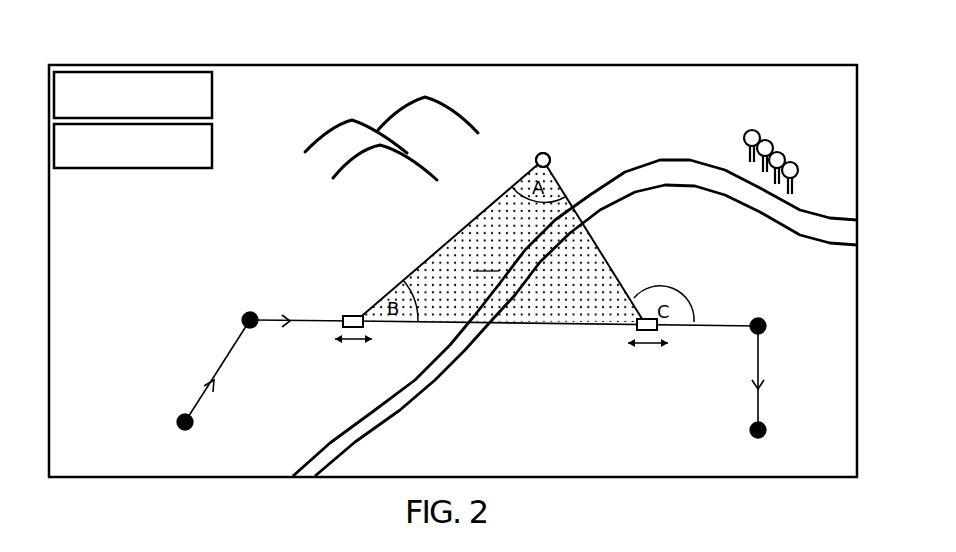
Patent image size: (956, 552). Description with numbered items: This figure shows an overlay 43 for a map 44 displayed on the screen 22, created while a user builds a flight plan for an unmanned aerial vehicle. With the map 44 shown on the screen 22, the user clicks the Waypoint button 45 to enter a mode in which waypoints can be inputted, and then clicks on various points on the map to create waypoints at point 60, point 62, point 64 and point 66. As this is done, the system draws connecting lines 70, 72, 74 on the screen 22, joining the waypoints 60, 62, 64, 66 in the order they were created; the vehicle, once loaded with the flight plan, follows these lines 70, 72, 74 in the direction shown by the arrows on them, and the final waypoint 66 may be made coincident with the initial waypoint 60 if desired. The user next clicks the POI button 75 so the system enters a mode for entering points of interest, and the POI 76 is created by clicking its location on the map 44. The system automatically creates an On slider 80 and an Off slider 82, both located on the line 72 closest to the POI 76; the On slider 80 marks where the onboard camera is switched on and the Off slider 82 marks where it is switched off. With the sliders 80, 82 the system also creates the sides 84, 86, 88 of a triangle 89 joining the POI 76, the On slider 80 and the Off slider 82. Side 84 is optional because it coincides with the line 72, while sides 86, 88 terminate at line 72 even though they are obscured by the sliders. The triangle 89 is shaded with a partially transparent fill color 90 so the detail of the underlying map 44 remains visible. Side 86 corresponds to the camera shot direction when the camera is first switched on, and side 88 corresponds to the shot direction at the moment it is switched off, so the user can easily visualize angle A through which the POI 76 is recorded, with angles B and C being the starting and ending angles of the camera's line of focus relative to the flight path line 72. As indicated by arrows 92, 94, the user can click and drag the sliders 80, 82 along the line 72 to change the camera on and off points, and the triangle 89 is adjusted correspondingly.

The screen 22 is at (342, 65).
The overlay 43 is at (526, 144).
The map 44 is at (815, 112).
The Waypoint button 45 is at (214, 103).
The POI button 75 is at (214, 153).
The waypoint 60 is at (192, 426).
The waypoint 62 is at (244, 316).
The waypoint 64 is at (765, 322).
The waypoint 66 is at (765, 426).
The connecting line 70 is at (227, 362).
The connecting line 72 is at (312, 320).
The connecting line 74 is at (760, 371).
The POI 76 is at (550, 156).
The On slider 80 is at (365, 327).
The Off slider 82 is at (658, 331).
The side 84 is at (536, 326).
The side 86 is at (462, 228).
The side 88 is at (600, 247).
The triangle 89 is at (486, 261).
The partially transparent fill color 90 is at (594, 280).
The arrow 92 is at (353, 352).
The arrow 94 is at (648, 357).